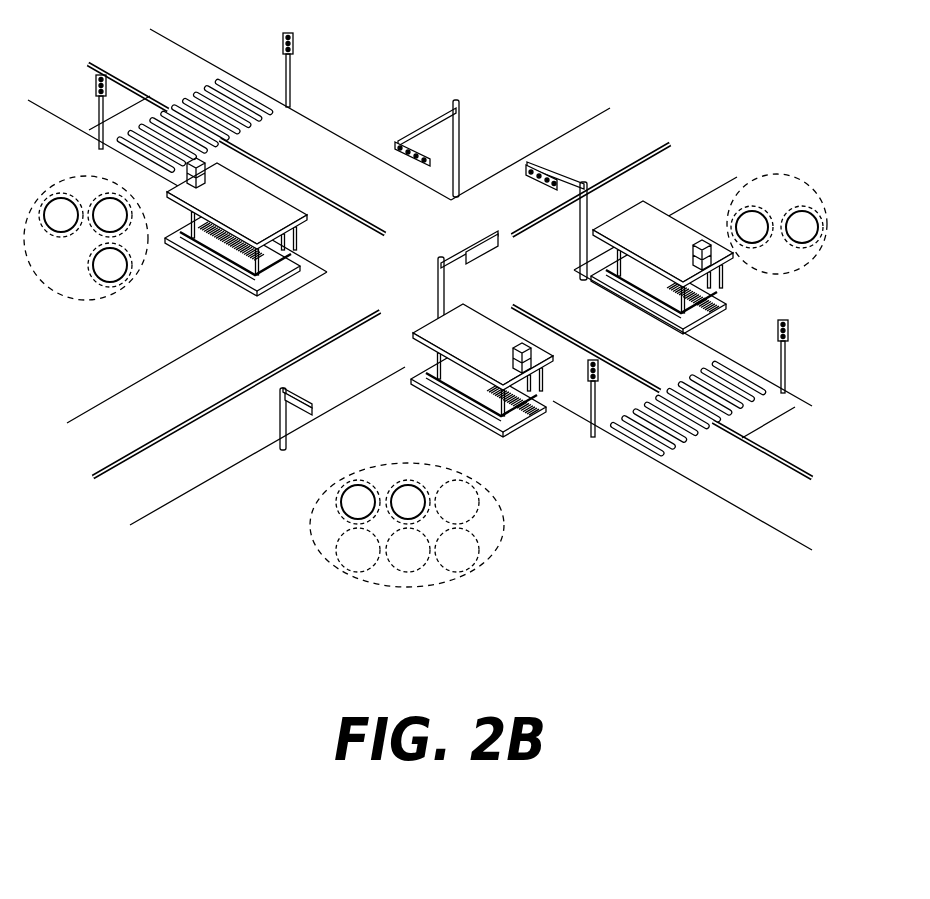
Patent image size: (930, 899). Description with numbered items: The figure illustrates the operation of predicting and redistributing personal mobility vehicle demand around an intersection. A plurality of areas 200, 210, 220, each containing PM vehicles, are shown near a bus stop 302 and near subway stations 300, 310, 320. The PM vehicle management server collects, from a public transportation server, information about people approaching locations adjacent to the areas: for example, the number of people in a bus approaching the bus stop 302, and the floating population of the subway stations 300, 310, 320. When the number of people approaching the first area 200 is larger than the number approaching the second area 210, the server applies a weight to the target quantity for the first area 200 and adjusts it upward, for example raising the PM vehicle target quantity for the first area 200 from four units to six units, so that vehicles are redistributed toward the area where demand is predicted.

The first area 200 is at (505, 520).
The second area 210 is at (57, 180).
The area 220 is at (780, 172).
The subway station 300 is at (452, 400).
The bus stop 302 is at (313, 410).
The subway station 310 is at (226, 266).
The subway station 320 is at (651, 216).